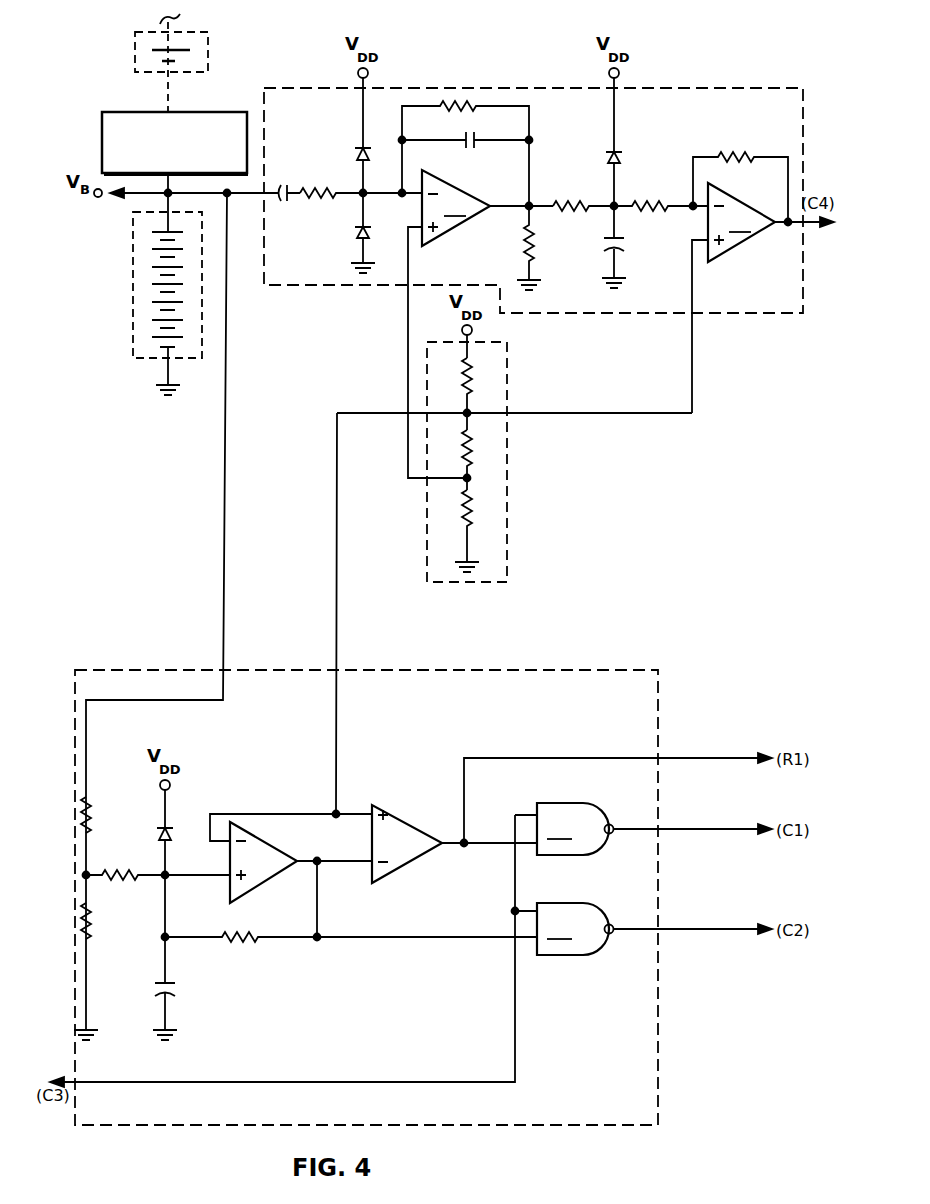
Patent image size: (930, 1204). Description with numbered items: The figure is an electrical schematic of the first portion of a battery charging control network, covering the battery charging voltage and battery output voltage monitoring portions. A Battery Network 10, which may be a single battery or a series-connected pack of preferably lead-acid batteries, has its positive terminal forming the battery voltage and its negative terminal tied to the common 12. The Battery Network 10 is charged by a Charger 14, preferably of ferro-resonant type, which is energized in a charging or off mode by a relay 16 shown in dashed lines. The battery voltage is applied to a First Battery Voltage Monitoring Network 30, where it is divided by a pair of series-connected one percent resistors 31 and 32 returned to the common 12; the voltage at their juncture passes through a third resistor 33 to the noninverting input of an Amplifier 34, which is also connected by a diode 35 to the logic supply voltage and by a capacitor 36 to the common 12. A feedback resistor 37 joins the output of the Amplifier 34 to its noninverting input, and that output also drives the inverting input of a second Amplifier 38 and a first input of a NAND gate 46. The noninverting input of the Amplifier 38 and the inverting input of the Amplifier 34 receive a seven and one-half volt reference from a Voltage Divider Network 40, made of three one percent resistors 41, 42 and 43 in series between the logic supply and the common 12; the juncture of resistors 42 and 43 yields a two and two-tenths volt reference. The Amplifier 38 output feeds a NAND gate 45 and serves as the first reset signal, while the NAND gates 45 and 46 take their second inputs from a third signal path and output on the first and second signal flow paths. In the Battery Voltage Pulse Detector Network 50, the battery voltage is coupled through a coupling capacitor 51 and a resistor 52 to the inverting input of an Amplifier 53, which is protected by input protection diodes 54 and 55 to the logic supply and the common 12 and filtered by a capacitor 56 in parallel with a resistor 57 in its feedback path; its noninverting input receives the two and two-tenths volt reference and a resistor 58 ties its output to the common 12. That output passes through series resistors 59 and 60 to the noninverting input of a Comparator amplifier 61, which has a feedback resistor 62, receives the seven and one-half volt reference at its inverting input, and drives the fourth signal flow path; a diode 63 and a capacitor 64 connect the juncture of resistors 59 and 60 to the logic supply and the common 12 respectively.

The Battery Network 10 is at (133, 264).
The common 12 is at (180, 385).
The Charger 14 is at (212, 112).
The relay 16 is at (208, 32).
The First Battery Voltage Monitoring Network 30 is at (176, 1125).
The resistor 31 is at (91, 817).
The resistor 32 is at (90, 932).
The third resistor 33 is at (137, 869).
The Amplifier 34 is at (264, 865).
The diode 35 is at (194, 822).
The capacitor 36 is at (169, 986).
The feedback resistor 37 is at (256, 915).
The second Amplifier 38 is at (403, 857).
The Voltage Divider Network 40 is at (507, 540).
The resistor 41 is at (470, 392).
The resistor 42 is at (472, 465).
The resistor 43 is at (470, 518).
The NAND gate 45 is at (575, 829).
The NAND gate 46 is at (575, 929).
The Battery Voltage Pulse Detector Network 50 is at (329, 88).
The coupling capacitor 51 is at (280, 202).
The resistor 52 is at (326, 189).
The Amplifier 53 is at (456, 208).
The input protection diode 54 is at (355, 153).
The input protection diode 55 is at (354, 233).
The capacitor 56 is at (475, 147).
The resistor 57 is at (480, 108).
The resistor 58 is at (524, 232).
The resistor 59 is at (582, 193).
The resistor 60 is at (662, 193).
The Comparator amplifier 61 is at (741, 222).
The feedback resistor 62 is at (755, 152).
The diode 63 is at (621, 159).
The capacitor 64 is at (621, 243).